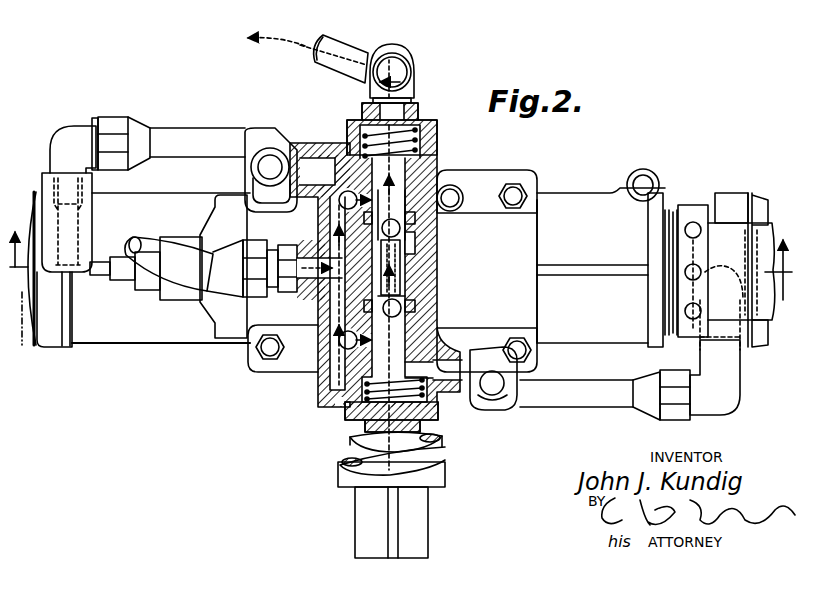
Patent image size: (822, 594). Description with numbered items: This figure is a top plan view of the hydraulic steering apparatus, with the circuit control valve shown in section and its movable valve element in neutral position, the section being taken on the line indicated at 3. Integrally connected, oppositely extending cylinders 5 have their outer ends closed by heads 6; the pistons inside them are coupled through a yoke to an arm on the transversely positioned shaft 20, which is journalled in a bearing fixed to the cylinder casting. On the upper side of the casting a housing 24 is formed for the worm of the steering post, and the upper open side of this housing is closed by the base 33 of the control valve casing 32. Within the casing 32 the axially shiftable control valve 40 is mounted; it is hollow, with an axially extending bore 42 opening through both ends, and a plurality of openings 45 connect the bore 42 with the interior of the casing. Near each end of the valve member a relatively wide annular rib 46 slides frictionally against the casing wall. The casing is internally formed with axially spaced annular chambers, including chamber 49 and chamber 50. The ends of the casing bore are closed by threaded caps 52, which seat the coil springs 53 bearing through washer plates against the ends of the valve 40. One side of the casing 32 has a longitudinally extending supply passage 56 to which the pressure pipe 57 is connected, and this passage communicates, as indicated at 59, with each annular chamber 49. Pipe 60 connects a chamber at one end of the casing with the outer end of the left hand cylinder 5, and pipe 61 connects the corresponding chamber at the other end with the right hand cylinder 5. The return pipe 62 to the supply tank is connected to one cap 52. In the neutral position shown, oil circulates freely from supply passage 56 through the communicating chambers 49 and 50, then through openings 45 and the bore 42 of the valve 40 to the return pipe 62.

The section line arrows 3 is at (401, 268).
The cylinders 5 is at (135, 350).
The heads 6 is at (28, 318).
The shaft 20 is at (352, 452).
The housing 24 is at (592, 271).
The control valve casing 32 is at (432, 300).
The base 33 is at (525, 262).
The control valve 40 is at (412, 278).
The bore 42 is at (400, 252).
The openings 45 is at (393, 333).
The annular rib 46 is at (452, 180).
The annular chamber 49 is at (460, 186).
The annular chamber 50 is at (412, 222).
The threaded caps 52 is at (432, 120).
The coil springs 53 is at (412, 112).
The supply passage 56 is at (343, 377).
The pipe 57 is at (168, 258).
The communication 59 is at (340, 205).
The pipe 60 is at (483, 358).
The pipe 61 is at (232, 138).
The return pipe 62 is at (345, 48).